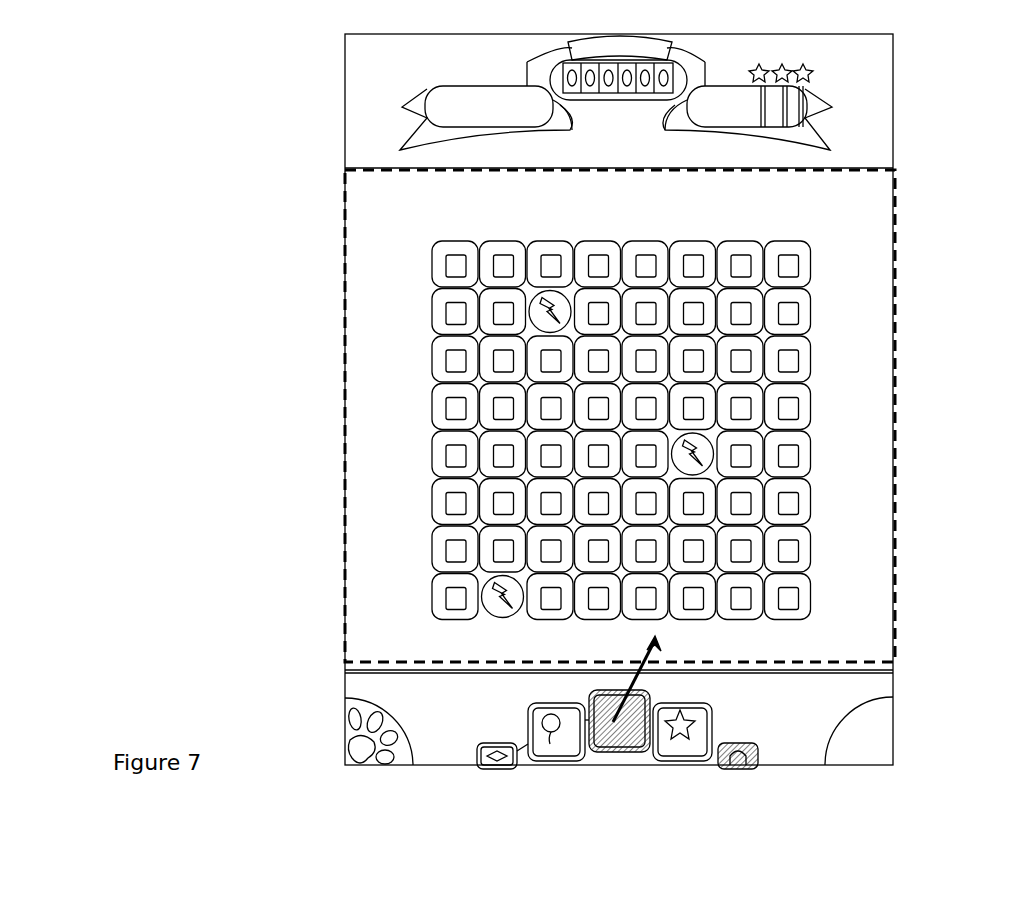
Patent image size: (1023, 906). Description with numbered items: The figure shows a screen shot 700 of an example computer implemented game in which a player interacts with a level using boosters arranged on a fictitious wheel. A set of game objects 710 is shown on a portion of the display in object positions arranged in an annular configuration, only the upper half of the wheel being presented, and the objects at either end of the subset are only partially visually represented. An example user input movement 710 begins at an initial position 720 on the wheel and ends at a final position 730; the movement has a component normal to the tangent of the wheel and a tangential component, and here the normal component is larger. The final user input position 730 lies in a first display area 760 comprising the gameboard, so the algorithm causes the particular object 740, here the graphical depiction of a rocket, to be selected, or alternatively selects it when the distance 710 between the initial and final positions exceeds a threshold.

The game screen 700 is at (900, 135).
The first display area 760 is at (857, 313).
The user input movement 710 is at (640, 676).
The initial position 720 is at (613, 715).
The final position 730 is at (655, 638).
The particular object 740 is at (630, 736).